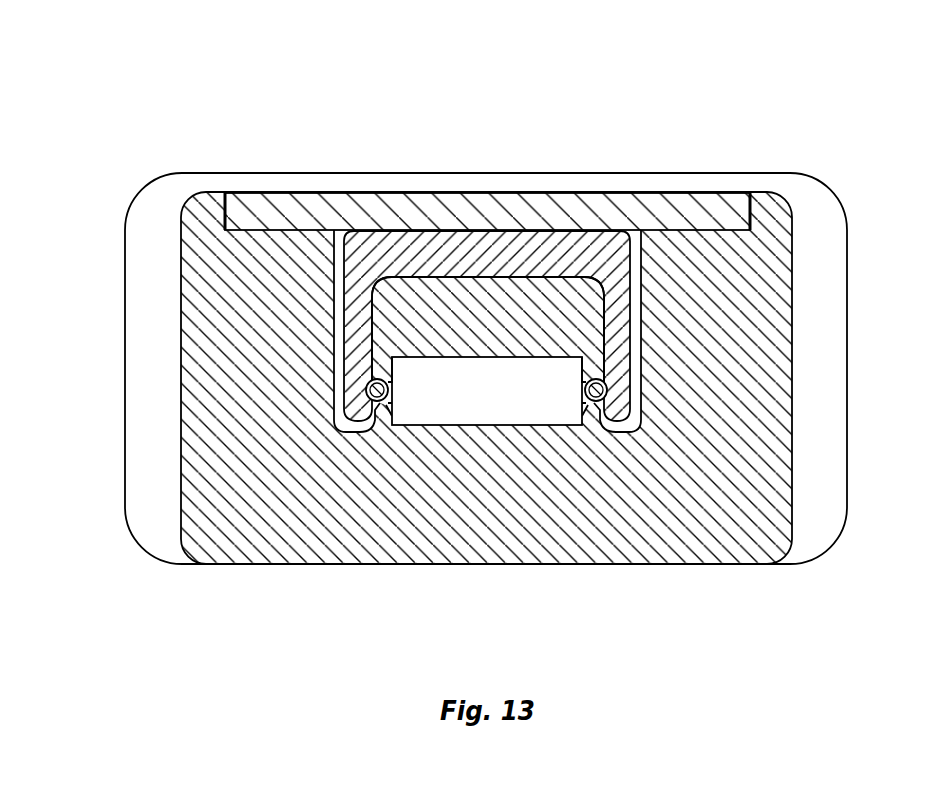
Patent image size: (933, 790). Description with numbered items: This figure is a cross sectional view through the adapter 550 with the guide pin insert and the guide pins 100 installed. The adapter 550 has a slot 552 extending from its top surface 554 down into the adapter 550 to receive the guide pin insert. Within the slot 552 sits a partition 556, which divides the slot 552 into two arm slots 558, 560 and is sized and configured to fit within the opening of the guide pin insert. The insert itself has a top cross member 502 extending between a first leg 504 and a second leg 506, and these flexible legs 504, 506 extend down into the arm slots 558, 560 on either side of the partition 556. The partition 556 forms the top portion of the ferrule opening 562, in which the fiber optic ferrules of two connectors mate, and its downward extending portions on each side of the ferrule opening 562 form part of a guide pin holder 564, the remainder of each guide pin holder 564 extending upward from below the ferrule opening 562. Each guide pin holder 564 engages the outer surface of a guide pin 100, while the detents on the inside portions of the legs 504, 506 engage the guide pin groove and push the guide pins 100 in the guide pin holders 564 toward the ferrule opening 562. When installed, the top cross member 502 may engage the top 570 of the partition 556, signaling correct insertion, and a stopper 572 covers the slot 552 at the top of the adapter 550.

The guide pin 100 is at (583, 388).
The top cross member 502 is at (433, 238).
The first leg 504 is at (353, 308).
The second leg 506 is at (620, 366).
The adapter 550 is at (861, 132).
The slot 552 is at (635, 278).
The top surface 554 is at (330, 234).
The partition 556 is at (592, 318).
The arm slot 558 is at (338, 375).
The arm slot 560 is at (633, 399).
The ferrule opening 562 is at (477, 408).
The guide pin holder 564 is at (393, 397).
The top of the partition 570 is at (398, 277).
The stopper 572 is at (672, 215).